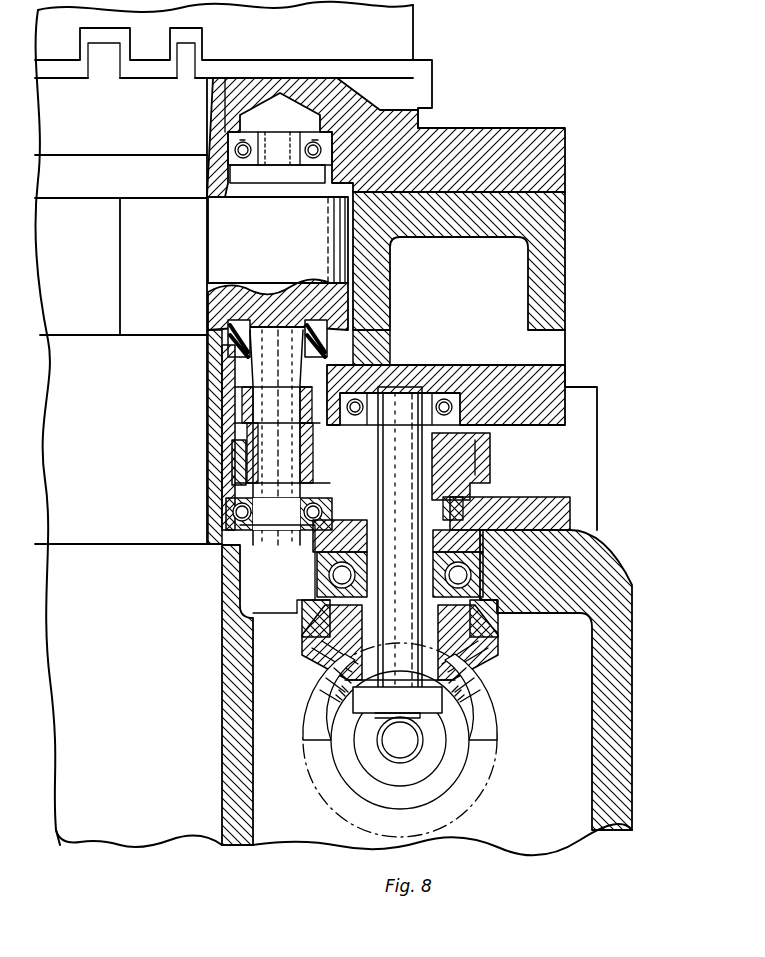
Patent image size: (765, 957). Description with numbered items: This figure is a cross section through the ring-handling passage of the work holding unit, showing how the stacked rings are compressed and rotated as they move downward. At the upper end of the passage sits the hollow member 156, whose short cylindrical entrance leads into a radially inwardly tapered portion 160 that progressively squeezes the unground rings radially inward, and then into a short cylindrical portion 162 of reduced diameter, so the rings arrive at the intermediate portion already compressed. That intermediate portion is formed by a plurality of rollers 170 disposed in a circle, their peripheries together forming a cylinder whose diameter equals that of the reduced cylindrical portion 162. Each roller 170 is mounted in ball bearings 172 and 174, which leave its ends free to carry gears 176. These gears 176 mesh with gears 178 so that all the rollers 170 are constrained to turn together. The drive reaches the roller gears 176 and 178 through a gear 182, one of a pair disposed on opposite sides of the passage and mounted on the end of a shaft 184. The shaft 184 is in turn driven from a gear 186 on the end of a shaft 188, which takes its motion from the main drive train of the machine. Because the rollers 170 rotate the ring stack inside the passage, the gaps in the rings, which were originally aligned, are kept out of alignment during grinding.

The hollow member 156 is at (210, 124).
The radially inwardly tapered portion 160 is at (96, 152).
The short cylindrical portion of reduced diameter 162 is at (113, 185).
The rollers 170 is at (225, 200).
The ball bearing 172 is at (322, 190).
The ball bearing 174 is at (225, 516).
The gears 176 is at (232, 467).
The gears 178 is at (482, 466).
The gear 182 is at (485, 660).
The shafts 184 is at (355, 533).
The gears 186 is at (480, 706).
The shaft 188 is at (408, 735).